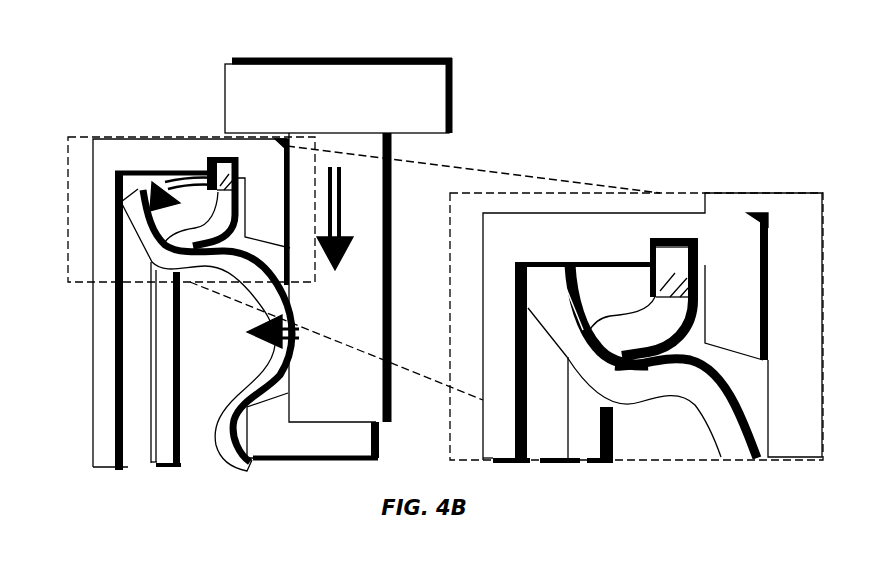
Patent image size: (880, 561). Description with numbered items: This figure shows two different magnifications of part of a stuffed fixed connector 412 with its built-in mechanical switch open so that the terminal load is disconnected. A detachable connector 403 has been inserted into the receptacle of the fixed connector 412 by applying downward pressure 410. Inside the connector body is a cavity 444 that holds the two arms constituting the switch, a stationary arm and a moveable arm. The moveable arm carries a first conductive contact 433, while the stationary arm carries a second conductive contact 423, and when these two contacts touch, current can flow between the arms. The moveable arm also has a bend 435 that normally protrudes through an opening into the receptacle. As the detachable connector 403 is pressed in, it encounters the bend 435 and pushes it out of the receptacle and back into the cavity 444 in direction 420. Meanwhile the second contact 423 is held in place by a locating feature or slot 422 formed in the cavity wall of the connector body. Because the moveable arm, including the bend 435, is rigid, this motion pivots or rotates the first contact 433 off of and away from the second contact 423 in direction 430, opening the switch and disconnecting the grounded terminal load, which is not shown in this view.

The detachable connector 403 is at (353, 111).
The downward pressure 410 is at (343, 232).
The fixed connector 412 is at (157, 167).
The direction 420 is at (252, 337).
The locating feature or slot 422 is at (683, 240).
The second conductive contact 423 is at (208, 165).
The direction 430 is at (160, 178).
The first conductive contact 433 is at (115, 172).
The bend 435 is at (284, 322).
The cavity 444 is at (220, 380).